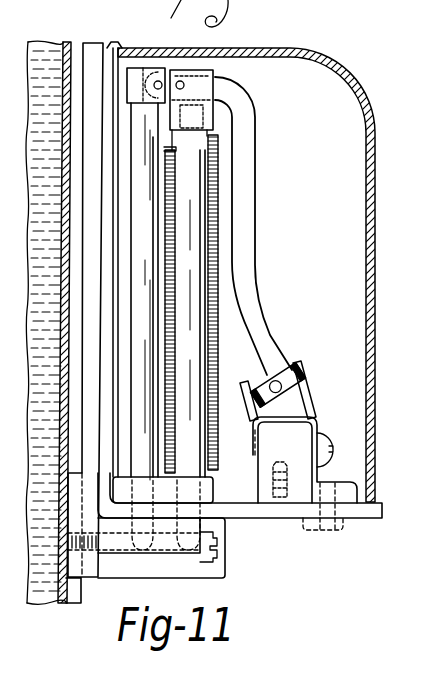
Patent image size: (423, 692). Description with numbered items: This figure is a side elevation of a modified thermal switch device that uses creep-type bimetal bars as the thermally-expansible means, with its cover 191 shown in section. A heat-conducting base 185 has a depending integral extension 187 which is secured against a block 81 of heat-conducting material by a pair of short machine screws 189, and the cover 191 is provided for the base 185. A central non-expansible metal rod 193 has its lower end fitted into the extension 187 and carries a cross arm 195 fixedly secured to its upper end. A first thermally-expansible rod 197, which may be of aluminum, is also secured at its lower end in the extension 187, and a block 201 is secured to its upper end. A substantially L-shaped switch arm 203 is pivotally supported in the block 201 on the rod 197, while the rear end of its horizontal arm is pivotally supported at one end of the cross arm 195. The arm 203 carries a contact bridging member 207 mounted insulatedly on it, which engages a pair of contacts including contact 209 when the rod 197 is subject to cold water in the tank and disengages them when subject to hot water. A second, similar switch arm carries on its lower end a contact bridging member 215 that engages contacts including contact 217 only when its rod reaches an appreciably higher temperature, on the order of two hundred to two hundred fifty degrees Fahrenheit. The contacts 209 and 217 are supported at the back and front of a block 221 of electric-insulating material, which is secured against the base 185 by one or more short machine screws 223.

The block of heat-conducting material 81 is at (90, 578).
The heat-conducting base 185 is at (96, 42).
The depending integral extension 187 is at (225, 568).
The machine screws 189 is at (222, 534).
The cover 191 is at (422, 108).
The central non-expansible metal rod 193 is at (127, 135).
The cross arm 195 is at (157, 68).
The first thermally-expansible rod 197 is at (215, 140).
The block 201 is at (213, 68).
The switch arm 203 is at (256, 222).
The contact bridging member 207 is at (256, 374).
The contact 209 is at (248, 406).
The contact bridging member 215 is at (280, 367).
The contact 217 is at (311, 378).
The block of electric-insulating material 221 is at (256, 478).
The machine screws 223 is at (363, 527).